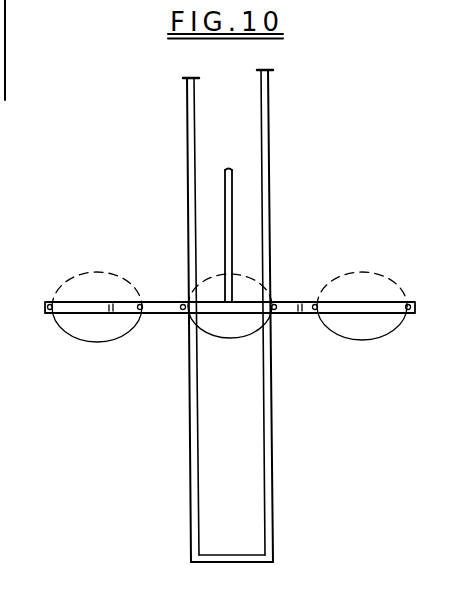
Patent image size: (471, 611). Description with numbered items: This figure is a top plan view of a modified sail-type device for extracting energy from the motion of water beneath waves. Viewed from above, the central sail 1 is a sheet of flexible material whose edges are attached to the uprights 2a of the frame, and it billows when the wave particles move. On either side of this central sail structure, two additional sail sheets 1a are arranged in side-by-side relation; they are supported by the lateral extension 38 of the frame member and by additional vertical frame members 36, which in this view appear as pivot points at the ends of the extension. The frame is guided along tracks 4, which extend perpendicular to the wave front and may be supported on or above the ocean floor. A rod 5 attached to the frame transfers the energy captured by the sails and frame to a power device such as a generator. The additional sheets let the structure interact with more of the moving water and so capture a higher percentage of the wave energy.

The sail 1 is at (230, 340).
The additional sail sheets 1a is at (96, 342).
The uprights 2a is at (182, 320).
The tracks 4 is at (190, 442).
The rod 5 is at (233, 175).
The additional vertical frame members 36 is at (50, 318).
The lateral extension 38 is at (158, 300).